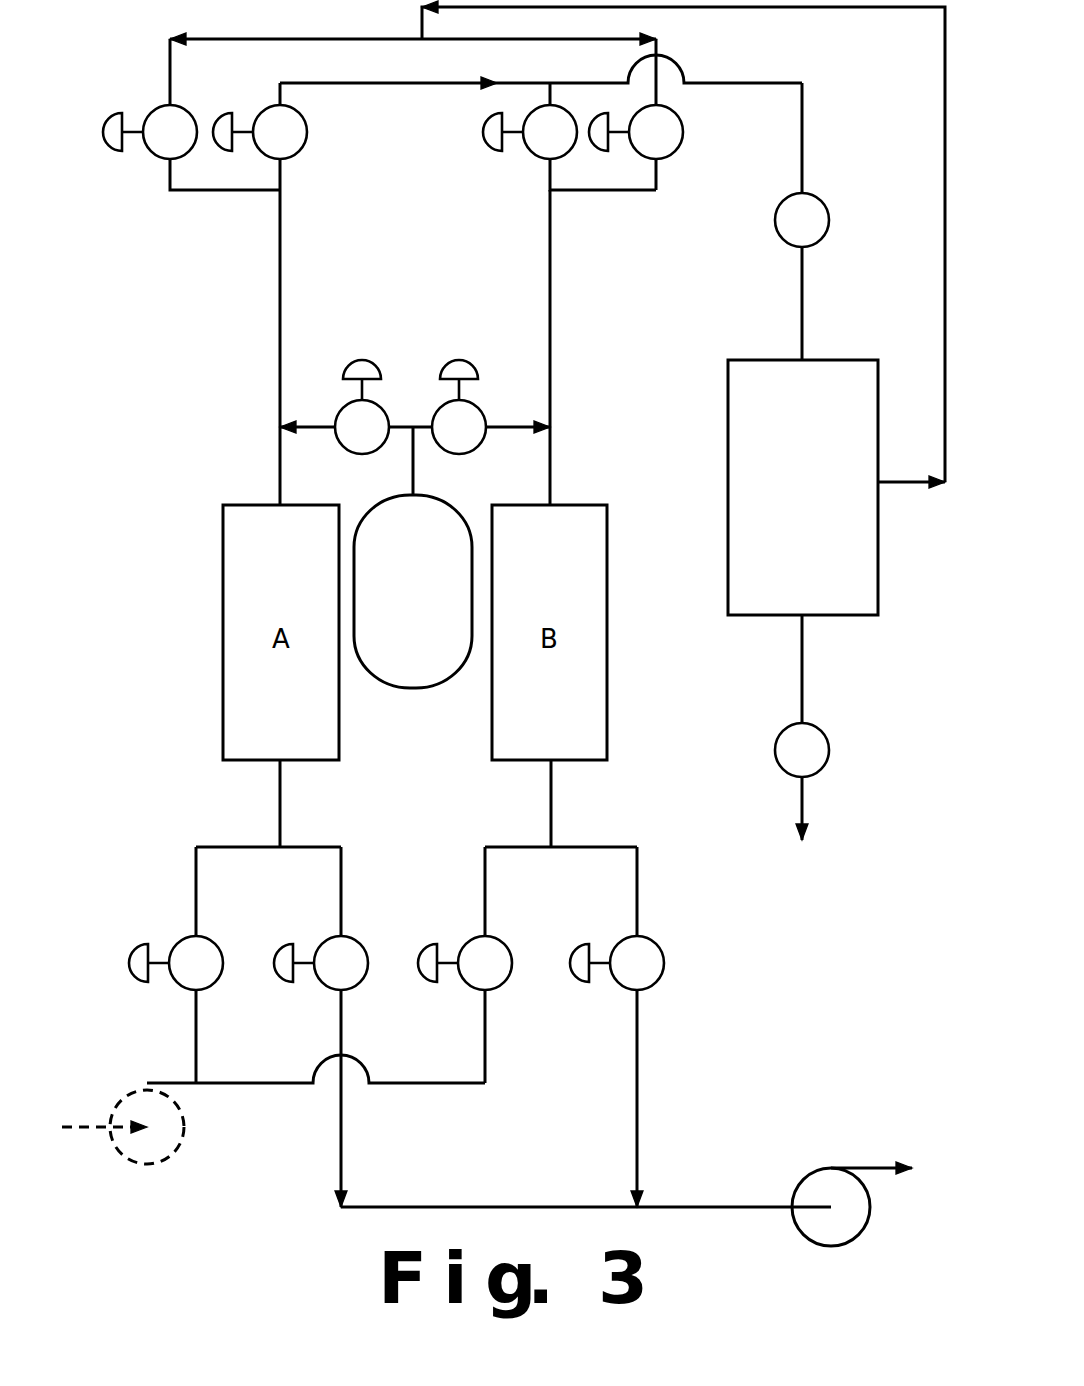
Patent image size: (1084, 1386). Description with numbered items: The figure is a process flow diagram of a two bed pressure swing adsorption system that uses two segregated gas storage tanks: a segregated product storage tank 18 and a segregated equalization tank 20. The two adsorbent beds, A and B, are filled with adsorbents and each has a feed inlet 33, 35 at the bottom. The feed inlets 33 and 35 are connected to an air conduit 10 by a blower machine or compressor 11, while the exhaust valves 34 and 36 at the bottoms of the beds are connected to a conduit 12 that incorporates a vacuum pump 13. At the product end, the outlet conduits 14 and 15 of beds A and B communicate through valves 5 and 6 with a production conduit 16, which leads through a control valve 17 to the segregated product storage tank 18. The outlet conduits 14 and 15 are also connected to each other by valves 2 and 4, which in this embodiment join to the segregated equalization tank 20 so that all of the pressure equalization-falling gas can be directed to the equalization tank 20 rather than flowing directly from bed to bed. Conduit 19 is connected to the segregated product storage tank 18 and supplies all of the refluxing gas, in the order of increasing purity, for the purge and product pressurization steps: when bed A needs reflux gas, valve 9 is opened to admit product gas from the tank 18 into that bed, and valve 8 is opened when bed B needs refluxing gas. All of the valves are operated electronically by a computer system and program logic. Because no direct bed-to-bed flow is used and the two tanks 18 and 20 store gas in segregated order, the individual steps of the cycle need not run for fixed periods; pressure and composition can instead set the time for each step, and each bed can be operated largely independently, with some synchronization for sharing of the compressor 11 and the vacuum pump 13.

The valve 2 is at (457, 453).
The valve 4 is at (362, 453).
The valve 5 is at (308, 142).
The valve 6 is at (573, 143).
The valve 8 is at (672, 153).
The valve 9 is at (185, 108).
The air conduit 10 is at (78, 1121).
The blower machine or compressor 11 is at (165, 1140).
The conduit 12 is at (698, 1207).
The vacuum pump 13 is at (833, 1233).
The outlet conduit 14 is at (280, 480).
The outlet conduit 15 is at (549, 483).
The production conduit 16 is at (403, 85).
The control valve 17 is at (775, 225).
The segregated product storage tank 18 is at (812, 504).
The conduit 19 is at (940, 238).
The segregated equalization tank 20 is at (431, 597).
The inlet 33 is at (210, 938).
The exhaust valve 34 is at (353, 937).
The inlet 35 is at (497, 937).
The exhaust valve 36 is at (650, 933).